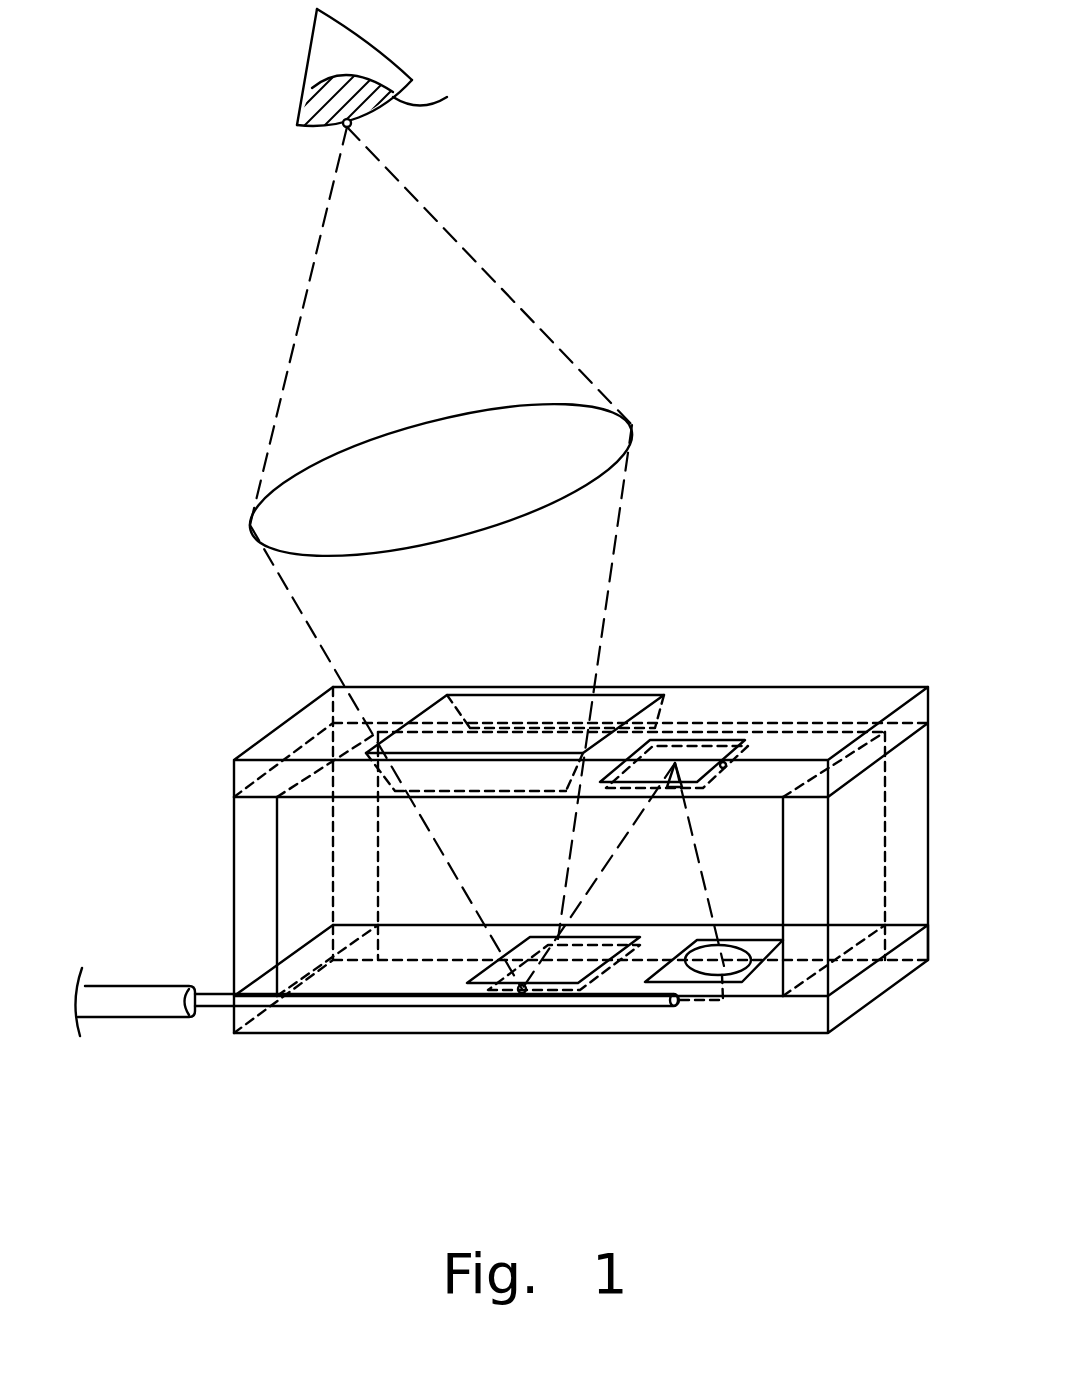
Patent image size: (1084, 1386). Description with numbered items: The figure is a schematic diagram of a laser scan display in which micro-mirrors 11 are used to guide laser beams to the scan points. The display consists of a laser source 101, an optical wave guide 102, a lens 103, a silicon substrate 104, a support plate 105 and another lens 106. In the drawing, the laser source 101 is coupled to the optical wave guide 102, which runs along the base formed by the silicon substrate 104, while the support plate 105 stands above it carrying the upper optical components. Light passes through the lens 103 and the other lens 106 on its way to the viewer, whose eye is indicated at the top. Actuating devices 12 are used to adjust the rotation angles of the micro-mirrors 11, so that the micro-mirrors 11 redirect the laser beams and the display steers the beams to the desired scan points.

The micro-mirror 11 is at (688, 747).
The actuating device 12 is at (723, 765).
The laser source 101 is at (123, 1002).
The optical wave guide 102 is at (303, 1007).
The lens 103 is at (733, 977).
The silicon substrate 104 is at (870, 983).
The support plate 105 is at (260, 900).
The lens 106 is at (575, 447).